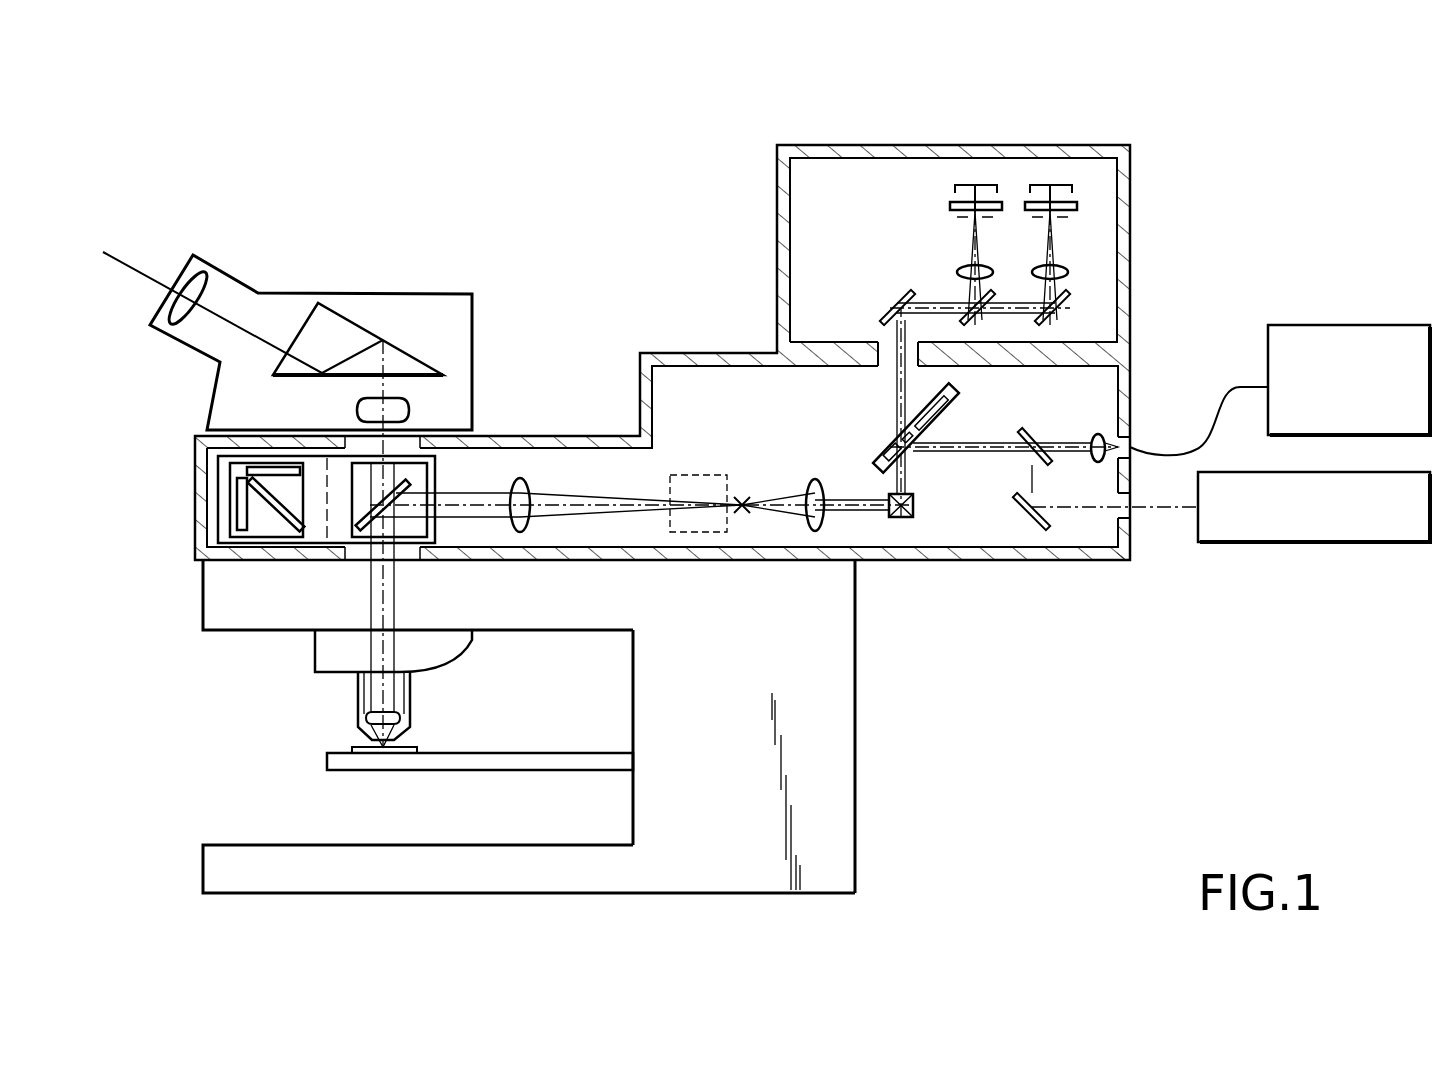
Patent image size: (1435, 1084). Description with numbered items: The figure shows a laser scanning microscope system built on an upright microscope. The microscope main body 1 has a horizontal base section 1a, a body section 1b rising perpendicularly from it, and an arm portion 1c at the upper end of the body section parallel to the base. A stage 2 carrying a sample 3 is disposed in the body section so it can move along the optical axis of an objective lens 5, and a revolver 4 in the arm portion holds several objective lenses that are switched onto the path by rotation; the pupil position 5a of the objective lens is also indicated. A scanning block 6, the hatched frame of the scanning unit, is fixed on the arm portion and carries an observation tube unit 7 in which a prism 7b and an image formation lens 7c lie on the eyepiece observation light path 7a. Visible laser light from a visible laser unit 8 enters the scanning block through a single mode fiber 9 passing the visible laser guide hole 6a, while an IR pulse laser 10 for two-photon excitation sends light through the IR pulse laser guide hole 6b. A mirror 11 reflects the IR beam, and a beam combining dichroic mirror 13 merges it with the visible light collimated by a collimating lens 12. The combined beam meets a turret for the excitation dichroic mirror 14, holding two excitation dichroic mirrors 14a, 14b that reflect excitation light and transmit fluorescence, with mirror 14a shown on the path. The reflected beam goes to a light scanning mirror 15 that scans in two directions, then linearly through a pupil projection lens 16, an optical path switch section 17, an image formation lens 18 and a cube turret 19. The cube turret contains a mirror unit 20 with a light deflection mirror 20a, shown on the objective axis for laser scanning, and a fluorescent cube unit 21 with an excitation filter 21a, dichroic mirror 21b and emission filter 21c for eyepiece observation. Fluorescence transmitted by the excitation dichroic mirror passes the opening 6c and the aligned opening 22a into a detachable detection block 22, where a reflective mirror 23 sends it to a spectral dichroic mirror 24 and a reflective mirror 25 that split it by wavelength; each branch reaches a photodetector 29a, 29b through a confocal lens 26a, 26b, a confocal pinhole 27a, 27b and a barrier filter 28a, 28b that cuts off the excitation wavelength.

The microscope main body 1 is at (546, 756).
The base section 1a is at (449, 875).
The body section 1b is at (835, 647).
The arm portion 1c is at (222, 582).
The stage 2 is at (436, 765).
The sample 3 is at (412, 748).
The revolver 4 is at (334, 660).
The objective lens 5 is at (412, 712).
The pupil position of the objective lens 5a is at (400, 689).
The scanning block 6 is at (1105, 560).
The visible laser guide hole 6a is at (1132, 440).
The IR pulse laser guide hole 6b is at (1132, 515).
The opening 6c is at (880, 363).
The observation tube unit 7 is at (445, 295).
The eyepiece observation light path 7a is at (143, 272).
The prism 7b is at (403, 363).
The image formation lens for the microscope 7c is at (397, 410).
The visible laser unit 8 is at (1362, 325).
The single mode fiber 9 is at (1241, 385).
The IR pulse laser 10 is at (1327, 545).
The mirror 11 is at (1040, 530).
The collimating lens 12 is at (1097, 432).
The beam combining dichroic mirror 13 is at (1030, 426).
The turret for excitation dichroic mirror 14 is at (878, 458).
The excitation dichroic mirror 14a is at (884, 450).
The excitation dichroic mirror 14b is at (956, 400).
The light scanning mirror 15 is at (913, 500).
The pupil projection lens 16 is at (827, 517).
The optical path switch section 17 is at (705, 532).
The image formation lens 18 is at (530, 485).
The cube turret 19 is at (218, 472).
The mirror unit 20 is at (427, 478).
The light deflection mirror 20a is at (407, 477).
The fluorescent cube unit 21 is at (218, 527).
The excitation filter 21a is at (237, 503).
The dichroic mirror 21b is at (277, 525).
The emission filter 21c is at (253, 467).
The detection block 22 is at (1132, 173).
The opening 22a is at (887, 337).
The reflective mirror 23 is at (887, 320).
The spectral dichroic mirror 24 is at (963, 307).
The reflective mirror 25 is at (1072, 300).
The confocal lens 26a is at (960, 263).
The confocal lens 26b is at (1075, 270).
The confocal pinhole 27a is at (963, 218).
The confocal pinhole 27b is at (1085, 218).
The barrier filter 28a is at (948, 200).
The barrier filter 28b is at (1077, 198).
The photodetector 29a is at (986, 183).
The photodetector 29b is at (1053, 183).